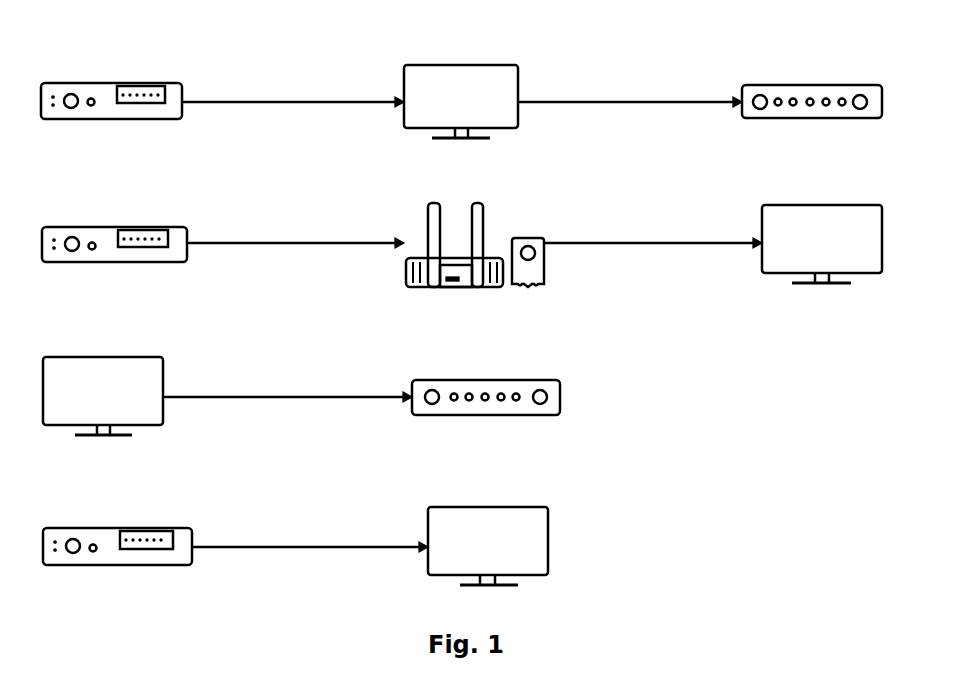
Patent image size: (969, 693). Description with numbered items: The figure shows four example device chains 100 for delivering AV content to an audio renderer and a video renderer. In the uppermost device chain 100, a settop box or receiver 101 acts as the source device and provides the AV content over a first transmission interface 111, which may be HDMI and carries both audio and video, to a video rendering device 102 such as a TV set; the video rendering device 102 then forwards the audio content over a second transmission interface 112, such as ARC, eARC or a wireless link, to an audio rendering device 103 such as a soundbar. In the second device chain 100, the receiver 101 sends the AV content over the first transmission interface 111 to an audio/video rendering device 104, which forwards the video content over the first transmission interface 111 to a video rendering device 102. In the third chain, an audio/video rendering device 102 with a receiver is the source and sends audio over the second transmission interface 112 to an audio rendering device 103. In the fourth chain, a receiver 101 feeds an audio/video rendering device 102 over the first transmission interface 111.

The device chain 100 is at (155, 18).
The settop box or receiver 101 is at (133, 82).
The video rendering device 102 is at (458, 64).
The audio rendering device 103 is at (803, 84).
The audio/video rendering device 104 is at (490, 222).
The first transmission interface 111 is at (278, 101).
The second transmission interface 112 is at (627, 101).